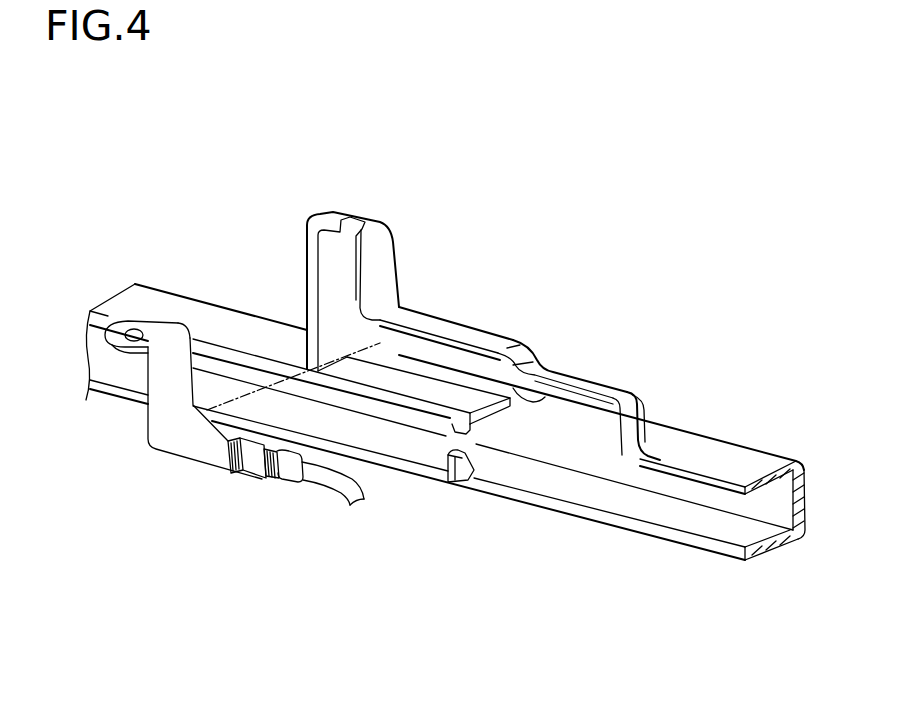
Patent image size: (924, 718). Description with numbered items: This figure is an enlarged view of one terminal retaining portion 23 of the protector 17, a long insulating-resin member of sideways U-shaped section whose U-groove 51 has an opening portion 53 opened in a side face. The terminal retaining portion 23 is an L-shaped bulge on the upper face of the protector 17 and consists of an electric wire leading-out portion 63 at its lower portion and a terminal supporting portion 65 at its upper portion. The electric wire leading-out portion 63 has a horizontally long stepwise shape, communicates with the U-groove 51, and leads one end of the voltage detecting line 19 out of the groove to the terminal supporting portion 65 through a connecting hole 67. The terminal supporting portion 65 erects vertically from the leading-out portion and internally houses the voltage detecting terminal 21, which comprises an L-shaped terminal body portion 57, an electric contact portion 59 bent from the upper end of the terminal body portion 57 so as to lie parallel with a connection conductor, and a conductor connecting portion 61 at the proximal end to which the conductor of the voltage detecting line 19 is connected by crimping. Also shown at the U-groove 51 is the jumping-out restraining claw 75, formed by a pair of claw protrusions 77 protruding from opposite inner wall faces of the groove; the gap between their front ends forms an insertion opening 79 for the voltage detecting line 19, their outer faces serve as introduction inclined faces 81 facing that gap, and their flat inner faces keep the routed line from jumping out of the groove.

The protector 17 is at (750, 444).
The voltage detecting line 19 is at (326, 483).
The voltage detecting terminal 21 is at (183, 393).
The terminal retaining portion 23 is at (443, 135).
The U-groove 51 is at (758, 507).
The opening portion 53 is at (632, 518).
The terminal body portion 57 is at (191, 450).
The electric contact portion 59 is at (140, 327).
The conductor connecting portion 61 is at (252, 471).
The electric wire leading-out portion 63 is at (520, 300).
The terminal supporting portion 65 is at (382, 222).
The connecting hole 67 is at (546, 396).
The jumping-out restraining claw 75 is at (441, 558).
The claw protrusions 77 is at (458, 422).
The insertion opening 79 is at (458, 452).
The introduction inclined faces 81 is at (457, 460).